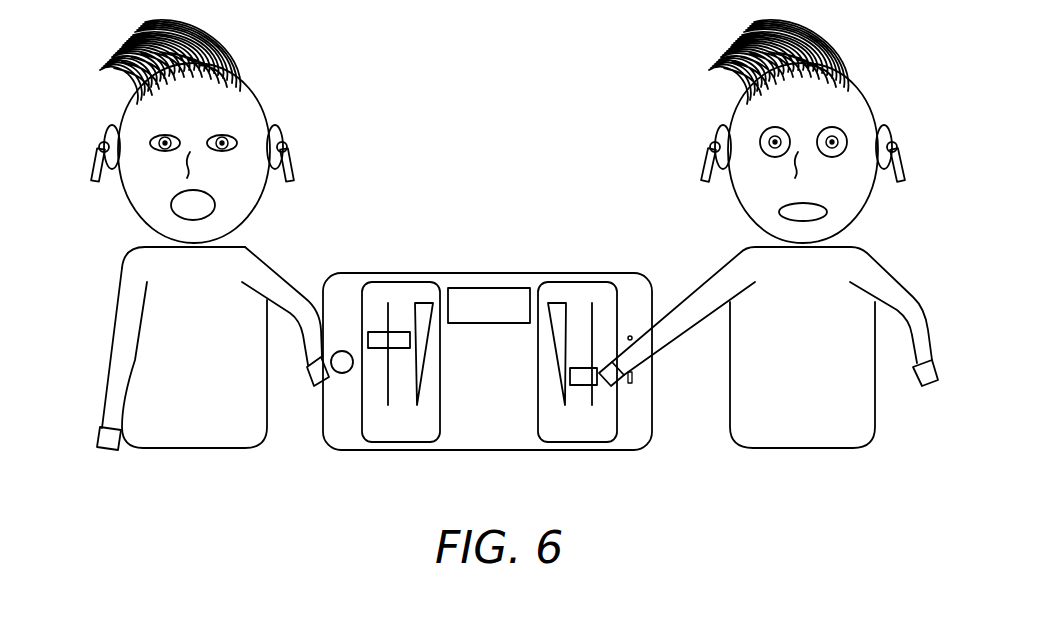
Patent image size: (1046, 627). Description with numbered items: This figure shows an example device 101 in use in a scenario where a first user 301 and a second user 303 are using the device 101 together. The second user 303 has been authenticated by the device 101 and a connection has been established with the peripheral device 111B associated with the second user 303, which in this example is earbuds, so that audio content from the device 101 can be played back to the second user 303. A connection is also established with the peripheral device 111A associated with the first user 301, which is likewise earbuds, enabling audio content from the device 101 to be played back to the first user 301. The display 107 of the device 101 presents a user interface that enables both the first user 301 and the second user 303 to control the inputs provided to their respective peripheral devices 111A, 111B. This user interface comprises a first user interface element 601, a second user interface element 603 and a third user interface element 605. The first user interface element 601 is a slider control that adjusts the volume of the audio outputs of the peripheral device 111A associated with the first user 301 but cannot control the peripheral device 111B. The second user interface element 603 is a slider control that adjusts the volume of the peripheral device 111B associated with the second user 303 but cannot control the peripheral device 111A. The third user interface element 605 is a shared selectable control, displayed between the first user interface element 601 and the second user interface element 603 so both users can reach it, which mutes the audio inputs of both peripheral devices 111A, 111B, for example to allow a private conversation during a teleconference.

The device 101 is at (484, 274).
The display 107 is at (490, 451).
The peripheral device 111A is at (292, 163).
The peripheral device 111B is at (711, 158).
The first user 301 is at (121, 98).
The second user 303 is at (875, 102).
The first user interface element 601 is at (401, 292).
The second user interface element 603 is at (577, 292).
The third user interface element 605 is at (490, 324).